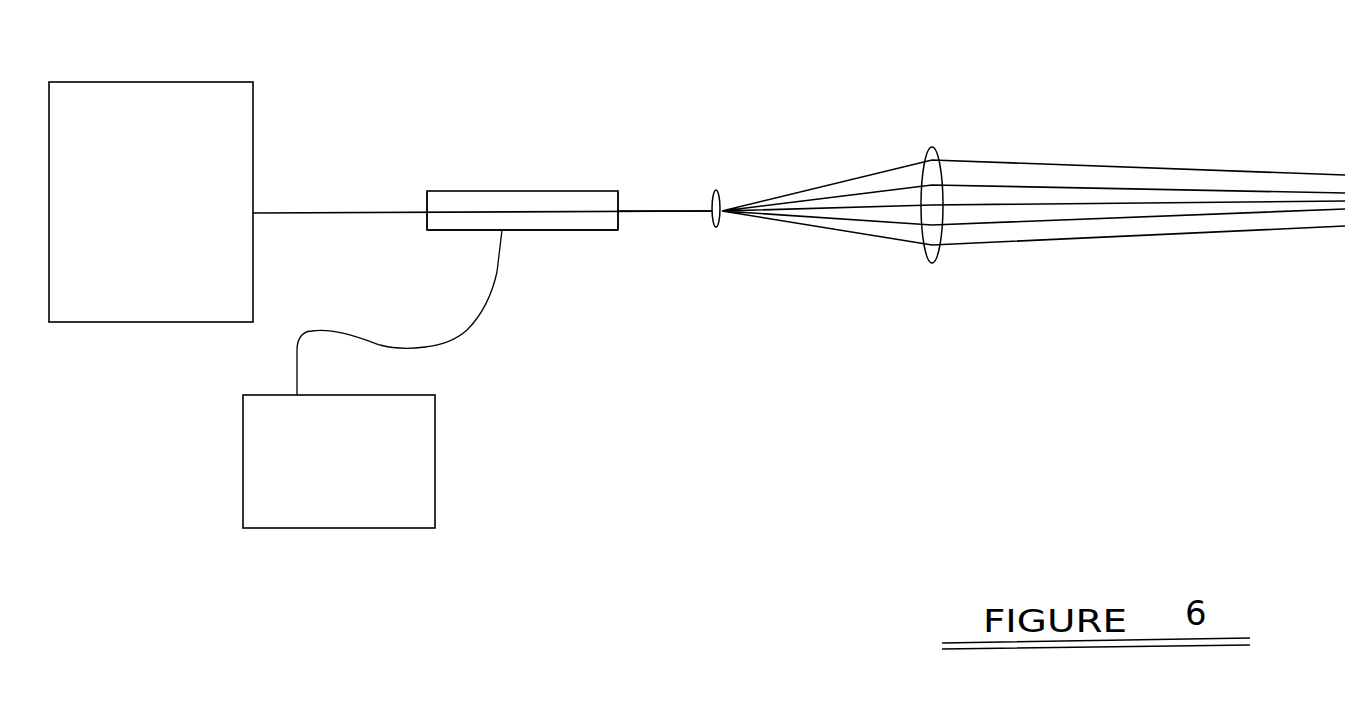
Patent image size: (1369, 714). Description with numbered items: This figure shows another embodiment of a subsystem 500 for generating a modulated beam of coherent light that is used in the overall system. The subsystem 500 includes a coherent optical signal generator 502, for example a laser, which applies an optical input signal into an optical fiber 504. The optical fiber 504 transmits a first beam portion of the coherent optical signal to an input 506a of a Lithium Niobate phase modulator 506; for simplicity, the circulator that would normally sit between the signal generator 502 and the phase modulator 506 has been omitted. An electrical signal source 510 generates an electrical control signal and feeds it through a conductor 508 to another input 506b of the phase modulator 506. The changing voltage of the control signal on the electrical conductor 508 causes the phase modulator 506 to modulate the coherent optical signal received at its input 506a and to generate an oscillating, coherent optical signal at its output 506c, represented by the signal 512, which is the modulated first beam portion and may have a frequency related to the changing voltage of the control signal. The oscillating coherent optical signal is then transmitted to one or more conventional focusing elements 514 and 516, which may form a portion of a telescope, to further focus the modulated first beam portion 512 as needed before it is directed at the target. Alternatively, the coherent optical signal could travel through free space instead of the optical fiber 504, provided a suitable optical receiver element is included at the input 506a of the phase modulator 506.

The subsystem 500 is at (803, 45).
The coherent optical signal generator 502 is at (183, 298).
The optical fiber 504 is at (322, 211).
The Lithium Niobate phase modulator 506 is at (620, 188).
The input 506a is at (427, 210).
The input 506b is at (507, 230).
The output 506c is at (620, 217).
The conductor 508 is at (463, 333).
The electrical signal source 510 is at (372, 522).
The signal 512 is at (678, 210).
The focusing element 514 is at (717, 226).
The focusing element 516 is at (933, 147).